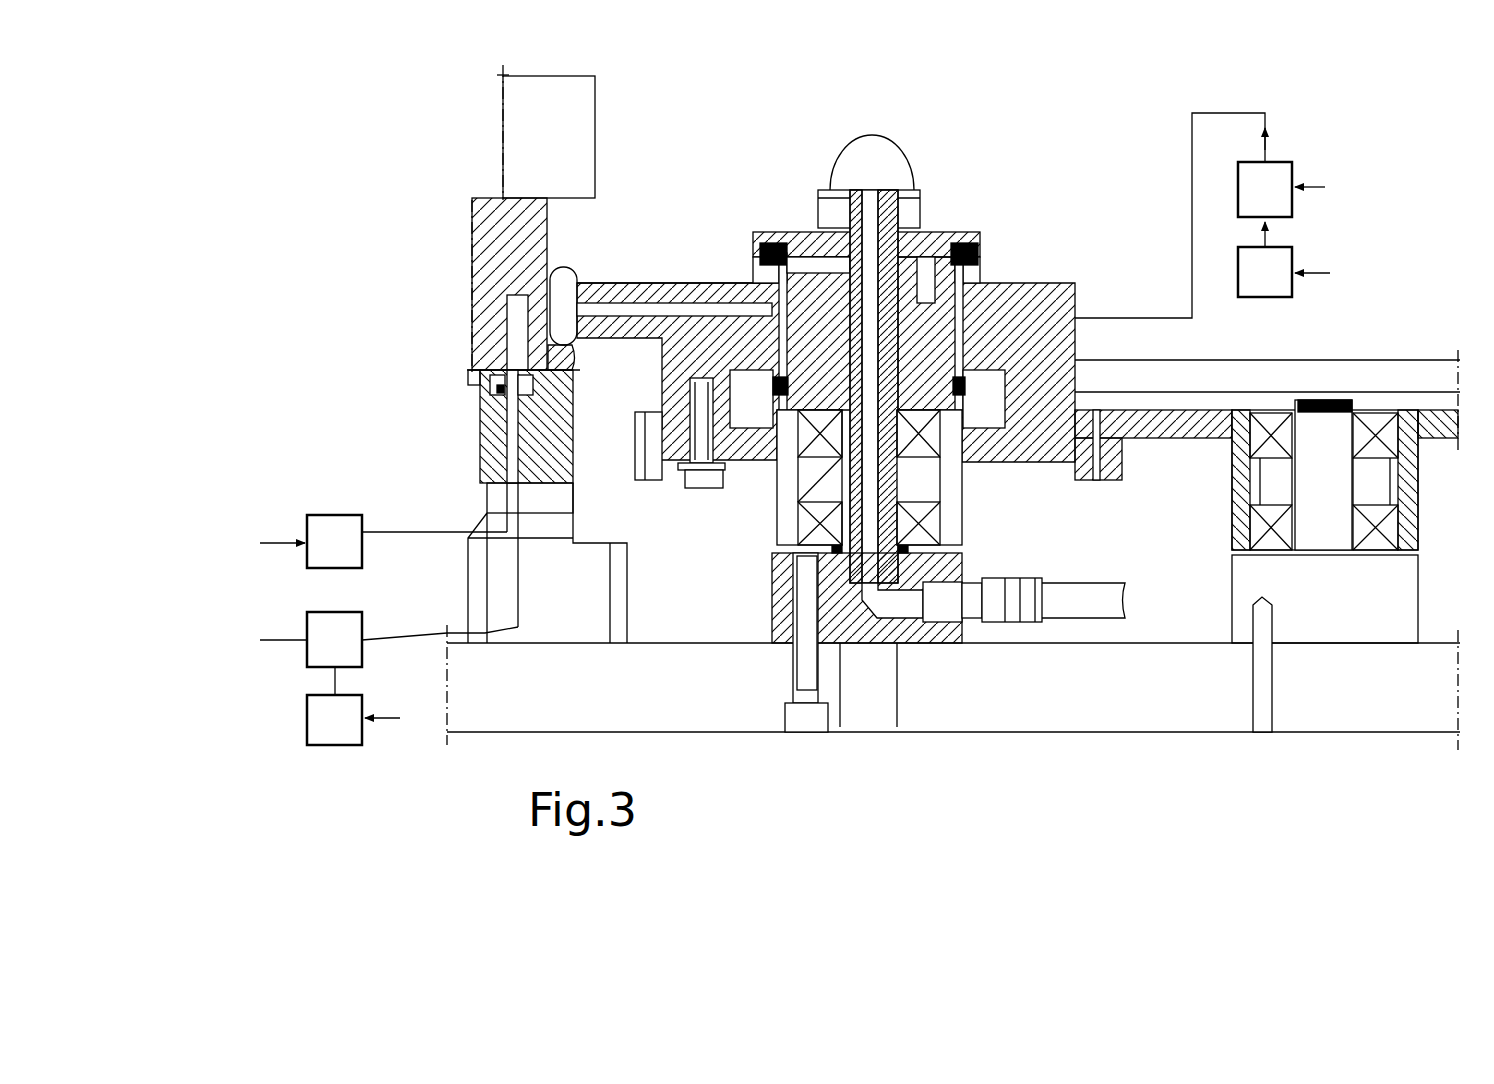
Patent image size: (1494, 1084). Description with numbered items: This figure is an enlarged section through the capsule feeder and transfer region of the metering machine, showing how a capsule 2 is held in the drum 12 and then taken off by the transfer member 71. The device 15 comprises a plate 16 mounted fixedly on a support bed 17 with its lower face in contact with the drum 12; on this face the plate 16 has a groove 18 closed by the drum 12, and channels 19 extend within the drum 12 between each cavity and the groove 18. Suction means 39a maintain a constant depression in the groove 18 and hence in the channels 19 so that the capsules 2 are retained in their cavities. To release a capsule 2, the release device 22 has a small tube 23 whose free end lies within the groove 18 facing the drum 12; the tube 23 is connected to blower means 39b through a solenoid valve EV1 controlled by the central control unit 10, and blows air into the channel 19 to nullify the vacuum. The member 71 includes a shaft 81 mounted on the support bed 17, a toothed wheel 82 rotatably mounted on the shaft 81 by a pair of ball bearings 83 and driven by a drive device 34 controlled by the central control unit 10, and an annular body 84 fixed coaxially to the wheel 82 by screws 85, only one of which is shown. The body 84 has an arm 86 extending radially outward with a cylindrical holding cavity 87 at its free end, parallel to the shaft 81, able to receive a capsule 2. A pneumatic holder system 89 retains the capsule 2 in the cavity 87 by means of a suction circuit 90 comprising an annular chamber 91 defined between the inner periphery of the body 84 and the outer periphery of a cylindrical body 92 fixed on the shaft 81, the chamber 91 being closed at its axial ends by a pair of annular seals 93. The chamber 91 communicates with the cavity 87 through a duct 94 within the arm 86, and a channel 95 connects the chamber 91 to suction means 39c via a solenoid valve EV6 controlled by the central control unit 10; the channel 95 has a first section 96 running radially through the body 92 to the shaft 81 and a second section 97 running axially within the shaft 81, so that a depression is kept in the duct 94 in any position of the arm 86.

The drum 12 is at (490, 234).
The capsule 2 is at (565, 264).
The arm 86 is at (600, 284).
The channel 19 is at (520, 308).
The cylindrical holding cavity 87 is at (568, 332).
The device 15 is at (500, 345).
The small tube 23 is at (492, 380).
The release device 22 is at (500, 388).
The groove 18 is at (520, 393).
The duct 94 is at (525, 392).
The plate 16 is at (490, 450).
The suction means 39a is at (312, 533).
The solenoid valve EV1 is at (345, 628).
The blower means 39b is at (318, 746).
The annular seals 93 is at (780, 232).
The first section 96 is at (810, 358).
The shaft 81 is at (898, 208).
The member 71 is at (993, 238).
The cylindrical body 92 is at (988, 284).
The annular body 84 is at (1060, 256).
The annular chamber 91 is at (1075, 312).
The ball bearings 83 is at (1075, 358).
The toothed wheel 82 is at (658, 443).
The screws 85 is at (702, 473).
The second section 97 is at (798, 503).
The channel 95 is at (884, 478).
The suction circuit 90 is at (884, 560).
The pneumatic holder system 89 is at (912, 620).
The support bed 17 is at (1030, 712).
The drive device 34 is at (1422, 475).
The suction means 39c is at (1268, 298).
The solenoid valve EV6 is at (1282, 165).
The central control and processing unit 10 is at (801, 389).